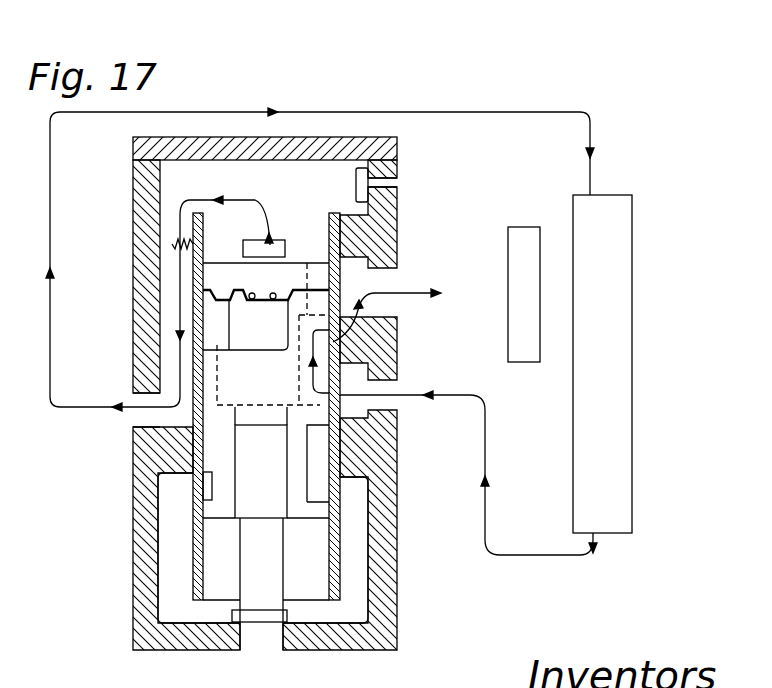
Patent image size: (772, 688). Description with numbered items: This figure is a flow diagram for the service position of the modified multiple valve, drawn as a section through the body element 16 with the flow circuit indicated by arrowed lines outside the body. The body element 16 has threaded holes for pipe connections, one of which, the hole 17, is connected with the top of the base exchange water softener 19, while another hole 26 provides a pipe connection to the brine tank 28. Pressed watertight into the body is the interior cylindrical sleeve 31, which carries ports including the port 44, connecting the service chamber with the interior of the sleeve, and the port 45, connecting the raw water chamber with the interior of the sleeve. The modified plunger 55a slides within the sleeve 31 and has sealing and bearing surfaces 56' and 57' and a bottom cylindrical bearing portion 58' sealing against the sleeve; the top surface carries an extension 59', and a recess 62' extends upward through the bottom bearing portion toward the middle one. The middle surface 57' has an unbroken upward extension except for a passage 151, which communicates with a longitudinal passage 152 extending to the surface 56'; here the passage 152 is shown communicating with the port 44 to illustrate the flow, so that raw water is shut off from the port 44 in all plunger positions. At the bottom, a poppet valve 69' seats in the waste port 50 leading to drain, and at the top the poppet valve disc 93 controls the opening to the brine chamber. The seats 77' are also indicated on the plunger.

The body element 16 is at (387, 635).
The hole 17 is at (133, 395).
The base exchange water softener 19 is at (622, 370).
The hole 26 is at (388, 186).
The brine tank 28 is at (510, 363).
The interior cylindrical sleeve 31 is at (193, 563).
The port 44 is at (322, 338).
The port 45 is at (268, 252).
The waste port 50 is at (268, 648).
The plunger 55a is at (214, 506).
The sealing and bearing surface 56' is at (382, 406).
The sealing and bearing surface 57' is at (374, 460).
The bottom cylindrical bearing portion 58' is at (375, 432).
The extension 59' is at (266, 320).
The recess 62' is at (261, 515).
The poppet valve 69' is at (286, 618).
The valve seats 77' is at (263, 309).
The poppet valve disc 93 is at (356, 184).
The passage 151 is at (300, 388).
The longitudinal passage 152 is at (307, 278).